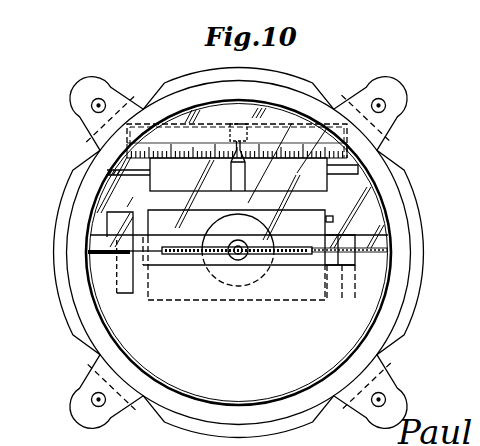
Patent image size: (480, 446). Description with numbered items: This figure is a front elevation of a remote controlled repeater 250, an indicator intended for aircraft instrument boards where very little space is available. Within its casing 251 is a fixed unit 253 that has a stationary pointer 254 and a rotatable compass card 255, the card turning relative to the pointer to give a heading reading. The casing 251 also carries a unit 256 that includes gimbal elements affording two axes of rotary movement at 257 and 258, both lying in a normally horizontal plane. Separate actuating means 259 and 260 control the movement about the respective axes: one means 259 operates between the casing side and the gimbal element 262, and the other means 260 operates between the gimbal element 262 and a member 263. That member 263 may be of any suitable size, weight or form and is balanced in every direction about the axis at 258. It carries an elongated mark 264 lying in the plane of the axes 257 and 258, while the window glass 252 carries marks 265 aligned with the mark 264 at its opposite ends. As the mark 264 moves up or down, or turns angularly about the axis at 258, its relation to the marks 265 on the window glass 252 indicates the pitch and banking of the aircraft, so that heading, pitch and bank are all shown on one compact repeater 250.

The remote controlled repeater 250 is at (146, 84).
The casing 251 is at (321, 97).
The window glass 252 is at (380, 200).
The fixed unit 253 is at (110, 173).
The stationary pointer 254 is at (247, 181).
The rotatable compass card 255 is at (162, 160).
The unit 256 is at (333, 217).
The axis of rotary movement 257 is at (358, 232).
The axis of rotary movement 258 is at (240, 260).
The actuating means 259 is at (107, 302).
The actuating means 260 is at (217, 285).
The gimbal element 262 is at (173, 266).
The member 263 is at (298, 301).
The elongated mark 264 is at (291, 257).
The marks 265 is at (90, 236).